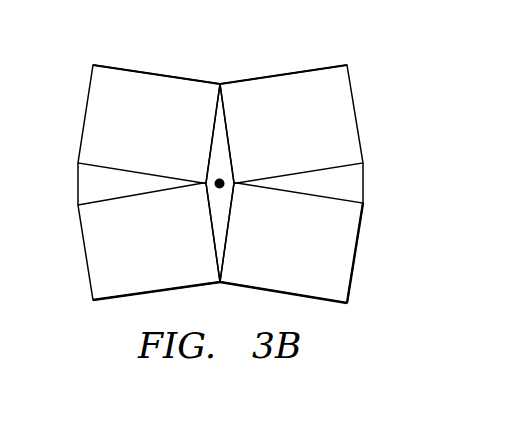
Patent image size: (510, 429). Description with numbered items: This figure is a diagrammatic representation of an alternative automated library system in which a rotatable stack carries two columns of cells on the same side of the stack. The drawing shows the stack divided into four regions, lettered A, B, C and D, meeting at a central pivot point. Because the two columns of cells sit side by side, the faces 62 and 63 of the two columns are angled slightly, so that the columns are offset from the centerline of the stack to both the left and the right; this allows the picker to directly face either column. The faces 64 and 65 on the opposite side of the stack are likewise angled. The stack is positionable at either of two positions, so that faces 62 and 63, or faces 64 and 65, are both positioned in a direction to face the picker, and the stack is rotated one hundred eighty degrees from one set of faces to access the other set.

The face 62 is at (98, 287).
The face 63 is at (342, 275).
The face 64 is at (345, 106).
The face 65 is at (97, 103).